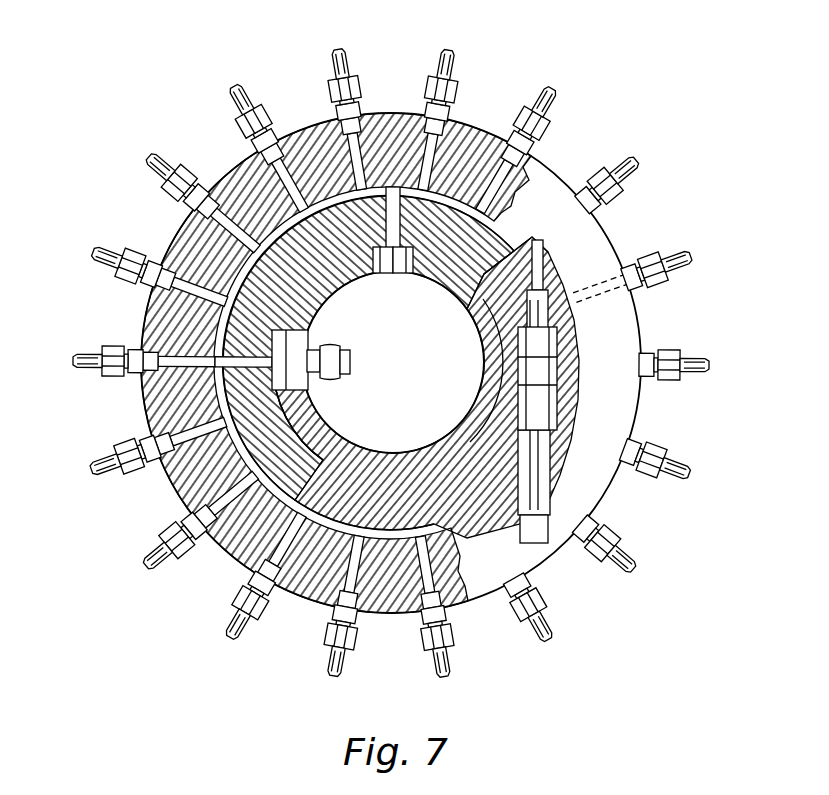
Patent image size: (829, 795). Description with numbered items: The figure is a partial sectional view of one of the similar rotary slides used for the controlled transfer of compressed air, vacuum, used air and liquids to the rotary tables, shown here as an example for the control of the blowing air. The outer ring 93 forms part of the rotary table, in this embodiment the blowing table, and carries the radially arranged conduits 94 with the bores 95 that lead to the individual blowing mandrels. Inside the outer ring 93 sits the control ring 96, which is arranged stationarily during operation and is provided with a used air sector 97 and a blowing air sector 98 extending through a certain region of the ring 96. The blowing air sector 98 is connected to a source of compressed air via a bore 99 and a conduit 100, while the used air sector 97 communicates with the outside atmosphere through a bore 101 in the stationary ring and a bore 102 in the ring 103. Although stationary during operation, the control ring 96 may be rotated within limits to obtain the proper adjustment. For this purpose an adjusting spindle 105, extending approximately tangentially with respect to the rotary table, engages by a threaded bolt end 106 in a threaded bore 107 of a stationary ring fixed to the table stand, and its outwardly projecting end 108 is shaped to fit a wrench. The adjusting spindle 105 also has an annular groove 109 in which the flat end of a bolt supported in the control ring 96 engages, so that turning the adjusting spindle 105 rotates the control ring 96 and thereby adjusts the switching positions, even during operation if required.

The outer ring 93 is at (226, 177).
The conduits 94 is at (146, 156).
The bores 95 is at (192, 278).
The control ring 96 is at (377, 483).
The used air sector 97 is at (247, 267).
The blowing air sector 98 is at (242, 440).
The bore 99 is at (233, 350).
The conduit 100 is at (350, 366).
The bore 101 is at (392, 273).
The bore 102 is at (377, 272).
The ring 103 is at (307, 318).
The adjusting spindle 105 is at (537, 430).
The threaded bolt end 106 is at (557, 307).
The threaded bore 107 is at (546, 251).
The wrench end 108 is at (550, 543).
The annular groove 109 is at (557, 363).